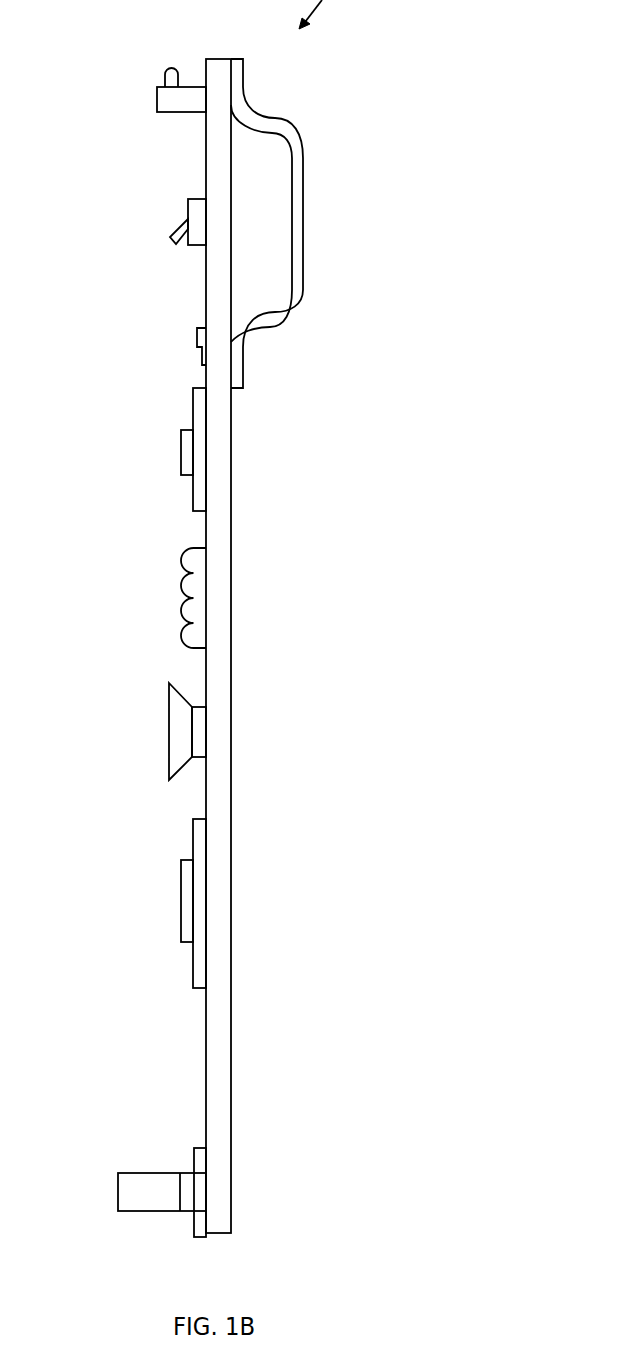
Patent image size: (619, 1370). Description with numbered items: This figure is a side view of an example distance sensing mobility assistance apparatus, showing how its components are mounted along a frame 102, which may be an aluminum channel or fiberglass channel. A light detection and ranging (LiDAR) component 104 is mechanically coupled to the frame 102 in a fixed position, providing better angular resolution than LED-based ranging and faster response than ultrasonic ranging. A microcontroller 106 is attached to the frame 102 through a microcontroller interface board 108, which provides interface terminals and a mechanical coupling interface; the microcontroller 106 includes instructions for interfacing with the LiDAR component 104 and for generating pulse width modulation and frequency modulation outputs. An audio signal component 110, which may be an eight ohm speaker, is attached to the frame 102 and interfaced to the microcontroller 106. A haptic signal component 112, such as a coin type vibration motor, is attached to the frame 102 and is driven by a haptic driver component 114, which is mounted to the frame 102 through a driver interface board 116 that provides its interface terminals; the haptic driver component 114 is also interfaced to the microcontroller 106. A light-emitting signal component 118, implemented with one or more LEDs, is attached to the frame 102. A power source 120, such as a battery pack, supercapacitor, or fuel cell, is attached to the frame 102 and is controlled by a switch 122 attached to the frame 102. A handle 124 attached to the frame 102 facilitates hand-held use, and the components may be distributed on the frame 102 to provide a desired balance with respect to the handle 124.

The frame 102 is at (213, 143).
The light detection and ranging (LiDAR) component 104 is at (123, 1198).
The microcontroller 106 is at (186, 904).
The microcontroller interface board 108 is at (198, 971).
The audio signal component 110 is at (172, 736).
The haptic signal component 112 is at (202, 339).
The haptic driver component 114 is at (188, 443).
The driver interface board 116 is at (200, 494).
The light-emitting signal component 118 is at (163, 101).
The power source 120 is at (182, 584).
The switch 122 is at (171, 240).
The handle 124 is at (287, 319).